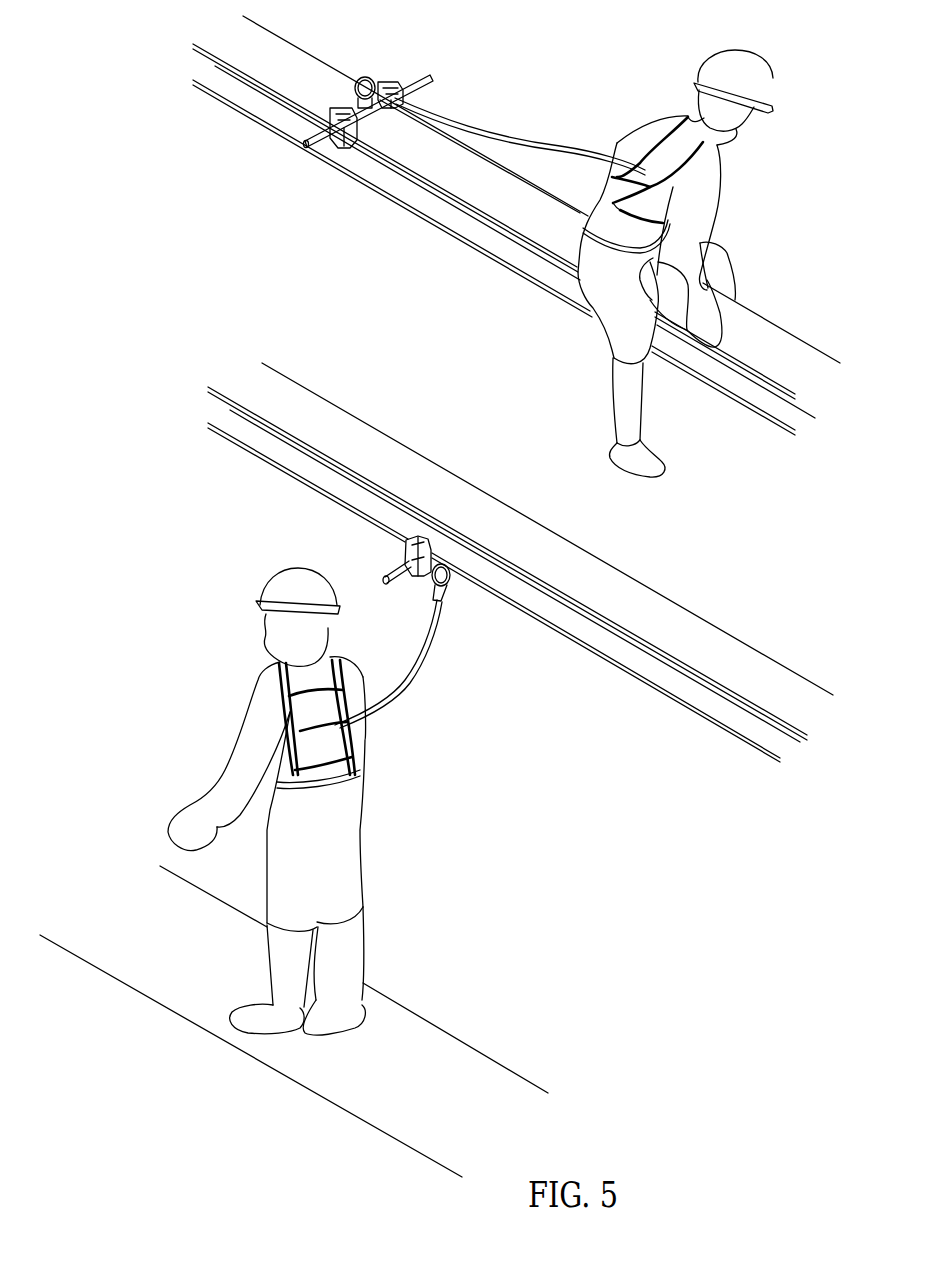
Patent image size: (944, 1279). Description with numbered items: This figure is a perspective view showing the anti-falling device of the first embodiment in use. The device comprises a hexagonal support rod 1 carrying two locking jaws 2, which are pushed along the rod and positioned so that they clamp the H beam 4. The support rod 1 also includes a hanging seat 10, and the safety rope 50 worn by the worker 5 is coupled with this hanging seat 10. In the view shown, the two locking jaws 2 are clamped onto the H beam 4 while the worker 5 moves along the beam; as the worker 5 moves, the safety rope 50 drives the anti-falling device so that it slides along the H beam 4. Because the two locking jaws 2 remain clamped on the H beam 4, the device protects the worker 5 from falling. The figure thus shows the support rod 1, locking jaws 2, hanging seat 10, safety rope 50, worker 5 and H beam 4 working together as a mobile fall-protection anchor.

The support rod 1 is at (430, 74).
The locking jaws 2 is at (392, 82).
The H beam 4 is at (446, 214).
The worker 5 is at (705, 193).
The hanging seat 10 is at (365, 77).
The safety rope 50 is at (567, 149).